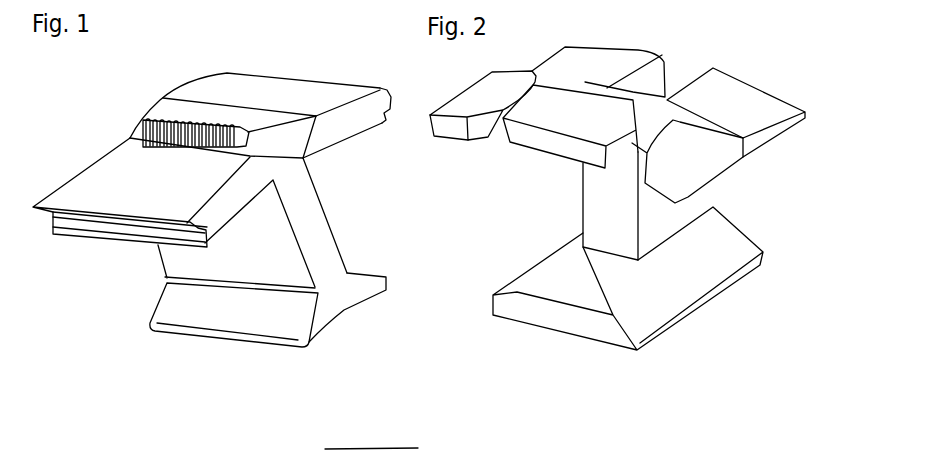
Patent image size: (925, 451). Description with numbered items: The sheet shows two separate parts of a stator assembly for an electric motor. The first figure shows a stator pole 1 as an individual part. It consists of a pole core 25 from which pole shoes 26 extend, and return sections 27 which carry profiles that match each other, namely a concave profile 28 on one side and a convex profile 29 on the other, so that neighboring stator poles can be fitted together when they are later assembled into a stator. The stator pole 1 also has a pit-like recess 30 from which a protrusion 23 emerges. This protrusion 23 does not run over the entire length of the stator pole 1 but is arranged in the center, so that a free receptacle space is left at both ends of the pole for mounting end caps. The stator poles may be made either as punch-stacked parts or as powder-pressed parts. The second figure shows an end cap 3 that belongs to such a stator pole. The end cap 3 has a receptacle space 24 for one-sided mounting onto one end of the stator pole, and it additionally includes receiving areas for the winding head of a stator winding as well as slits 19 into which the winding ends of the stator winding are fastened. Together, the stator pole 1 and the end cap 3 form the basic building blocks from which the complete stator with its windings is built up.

In FIG. 1, the stator pole 1 is at (158, 270).
In FIG. 1, the protrusion 23 is at (145, 122).
In FIG. 1, the pole core 25 is at (312, 238).
In FIG. 1, the pole shoes 26 is at (247, 317).
In FIG. 1, the return sections 27 is at (348, 115).
In FIG. 1, the concave profile 28 is at (92, 226).
In FIG. 1, the convex profile 29 is at (384, 104).
In FIG. 2, the convex profile 29 is at (426, 157).
In FIG. 1, the pit-like recess 30 is at (267, 138).
In FIG. 2, the end cap 3 is at (731, 295).
In FIG. 2, the slits 19 is at (500, 118).
In FIG. 2, the receptacle space 24 is at (668, 99).